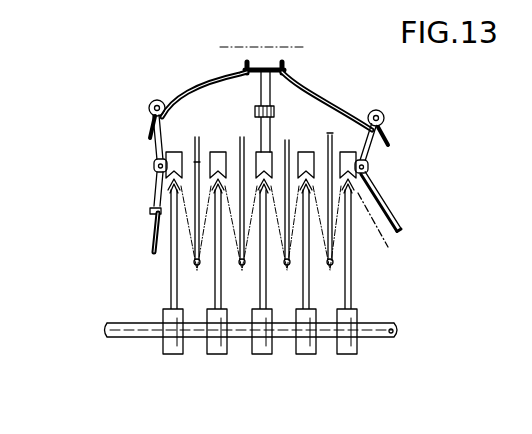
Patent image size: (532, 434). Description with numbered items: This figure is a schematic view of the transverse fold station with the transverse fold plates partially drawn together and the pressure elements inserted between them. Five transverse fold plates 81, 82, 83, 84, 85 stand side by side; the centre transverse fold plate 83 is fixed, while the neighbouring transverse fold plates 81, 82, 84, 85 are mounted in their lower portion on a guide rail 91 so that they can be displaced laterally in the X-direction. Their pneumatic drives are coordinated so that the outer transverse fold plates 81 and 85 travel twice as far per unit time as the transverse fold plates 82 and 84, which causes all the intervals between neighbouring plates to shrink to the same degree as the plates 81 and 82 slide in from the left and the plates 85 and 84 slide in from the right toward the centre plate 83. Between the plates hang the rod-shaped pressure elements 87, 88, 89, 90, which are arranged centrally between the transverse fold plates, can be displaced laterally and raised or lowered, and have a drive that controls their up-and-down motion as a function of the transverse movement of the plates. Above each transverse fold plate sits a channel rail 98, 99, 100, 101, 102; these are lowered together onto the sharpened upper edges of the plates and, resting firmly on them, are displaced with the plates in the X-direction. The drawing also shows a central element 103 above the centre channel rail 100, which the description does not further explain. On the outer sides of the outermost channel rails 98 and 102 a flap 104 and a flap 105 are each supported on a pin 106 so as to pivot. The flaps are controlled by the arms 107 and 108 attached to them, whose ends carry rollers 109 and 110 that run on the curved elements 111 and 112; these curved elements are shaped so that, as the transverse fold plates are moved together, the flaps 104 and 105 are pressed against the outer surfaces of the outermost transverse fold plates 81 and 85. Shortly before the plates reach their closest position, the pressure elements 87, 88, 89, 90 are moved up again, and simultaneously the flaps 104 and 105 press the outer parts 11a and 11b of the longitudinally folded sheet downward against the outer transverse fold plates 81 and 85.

The outer part of the longitudinally folded sheet 11a is at (165, 245).
The outer part of the longitudinally folded sheet 11b is at (388, 247).
The transverse fold plate 81 is at (172, 292).
The transverse fold plate 82 is at (214, 289).
The centre transverse fold plate 83 is at (261, 288).
The transverse fold plate 84 is at (304, 285).
The transverse fold plate 85 is at (352, 289).
The pressure element 87 is at (200, 134).
The pressure element 88 is at (243, 134).
The pressure element 89 is at (288, 146).
The pressure element 90 is at (330, 136).
The guide rail 91 is at (379, 335).
The channel rail 98 is at (175, 152).
The channel rail 99 is at (222, 152).
The channel rail 100 is at (303, 152).
The channel rail 101 is at (309, 150).
The channel rail 102 is at (346, 153).
The central support rod 103 is at (268, 62).
The flap 104 is at (149, 212).
The flap 105 is at (374, 190).
The pin 106 is at (154, 165).
The arm 107 is at (158, 148).
The arm 108 is at (386, 135).
The roller 109 is at (150, 107).
The roller 110 is at (381, 110).
The curved element 111 is at (213, 82).
The curved element 112 is at (284, 72).